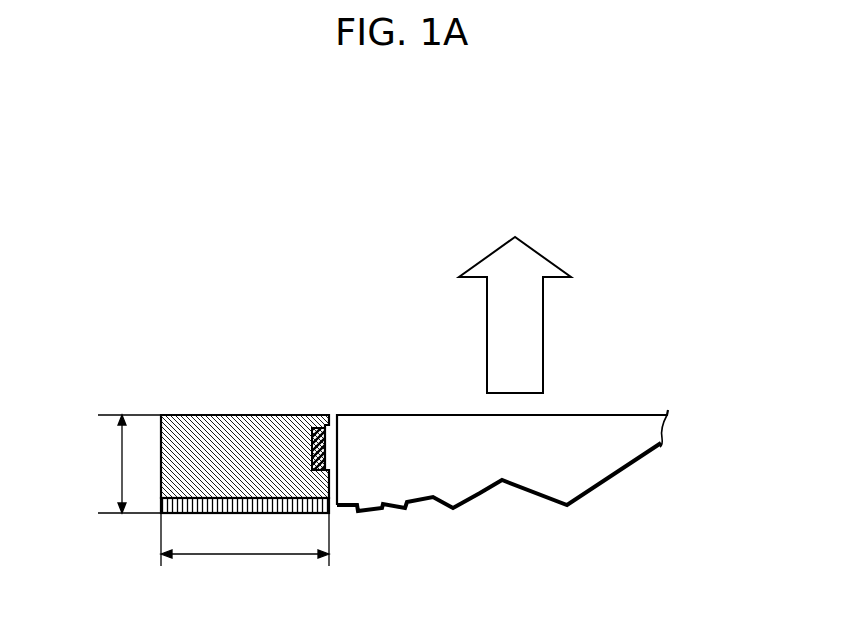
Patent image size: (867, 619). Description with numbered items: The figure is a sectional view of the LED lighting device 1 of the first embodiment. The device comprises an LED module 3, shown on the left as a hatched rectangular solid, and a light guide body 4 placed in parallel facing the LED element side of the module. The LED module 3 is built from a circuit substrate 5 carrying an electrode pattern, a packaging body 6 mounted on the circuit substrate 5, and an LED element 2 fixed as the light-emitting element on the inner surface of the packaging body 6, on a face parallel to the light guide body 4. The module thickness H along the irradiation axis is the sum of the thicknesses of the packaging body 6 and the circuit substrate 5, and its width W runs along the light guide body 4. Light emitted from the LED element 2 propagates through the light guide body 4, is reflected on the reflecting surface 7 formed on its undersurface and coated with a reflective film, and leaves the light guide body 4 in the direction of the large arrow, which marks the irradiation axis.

The LED lighting device 1 is at (151, 219).
The LED element 2 is at (305, 427).
The LED module 3 is at (282, 339).
The light guide body 4 is at (570, 455).
The circuit substrate 5 is at (198, 500).
The packaging body 6 is at (227, 423).
The reflecting surface 7 is at (480, 497).